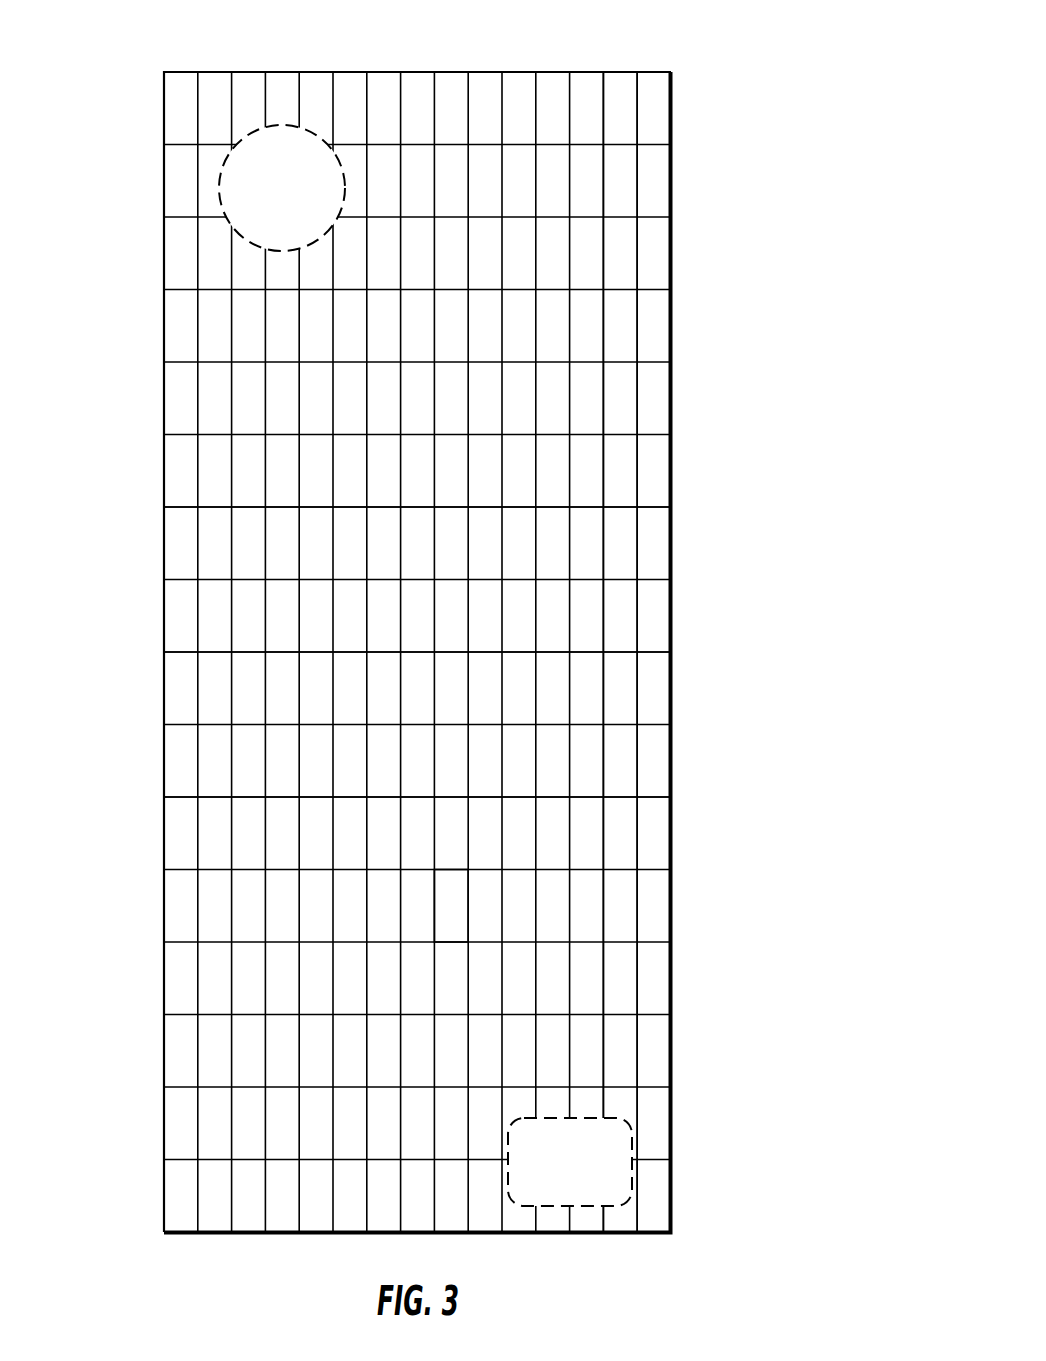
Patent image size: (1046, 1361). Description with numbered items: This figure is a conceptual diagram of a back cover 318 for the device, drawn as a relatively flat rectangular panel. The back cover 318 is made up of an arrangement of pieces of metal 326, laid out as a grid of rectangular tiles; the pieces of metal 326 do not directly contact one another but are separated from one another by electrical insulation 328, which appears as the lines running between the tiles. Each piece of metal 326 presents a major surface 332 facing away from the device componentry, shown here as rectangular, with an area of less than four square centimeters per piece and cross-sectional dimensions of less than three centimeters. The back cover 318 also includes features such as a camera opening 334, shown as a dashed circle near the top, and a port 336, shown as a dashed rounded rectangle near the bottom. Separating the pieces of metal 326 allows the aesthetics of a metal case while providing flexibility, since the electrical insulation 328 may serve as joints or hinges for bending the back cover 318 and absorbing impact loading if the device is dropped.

The back cover 318 is at (86, 84).
The pieces of metal 326 is at (618, 677).
The electrical insulation 328 is at (232, 800).
The major surface 332 is at (453, 903).
The camera opening 334 is at (300, 201).
The port 336 is at (588, 1172).